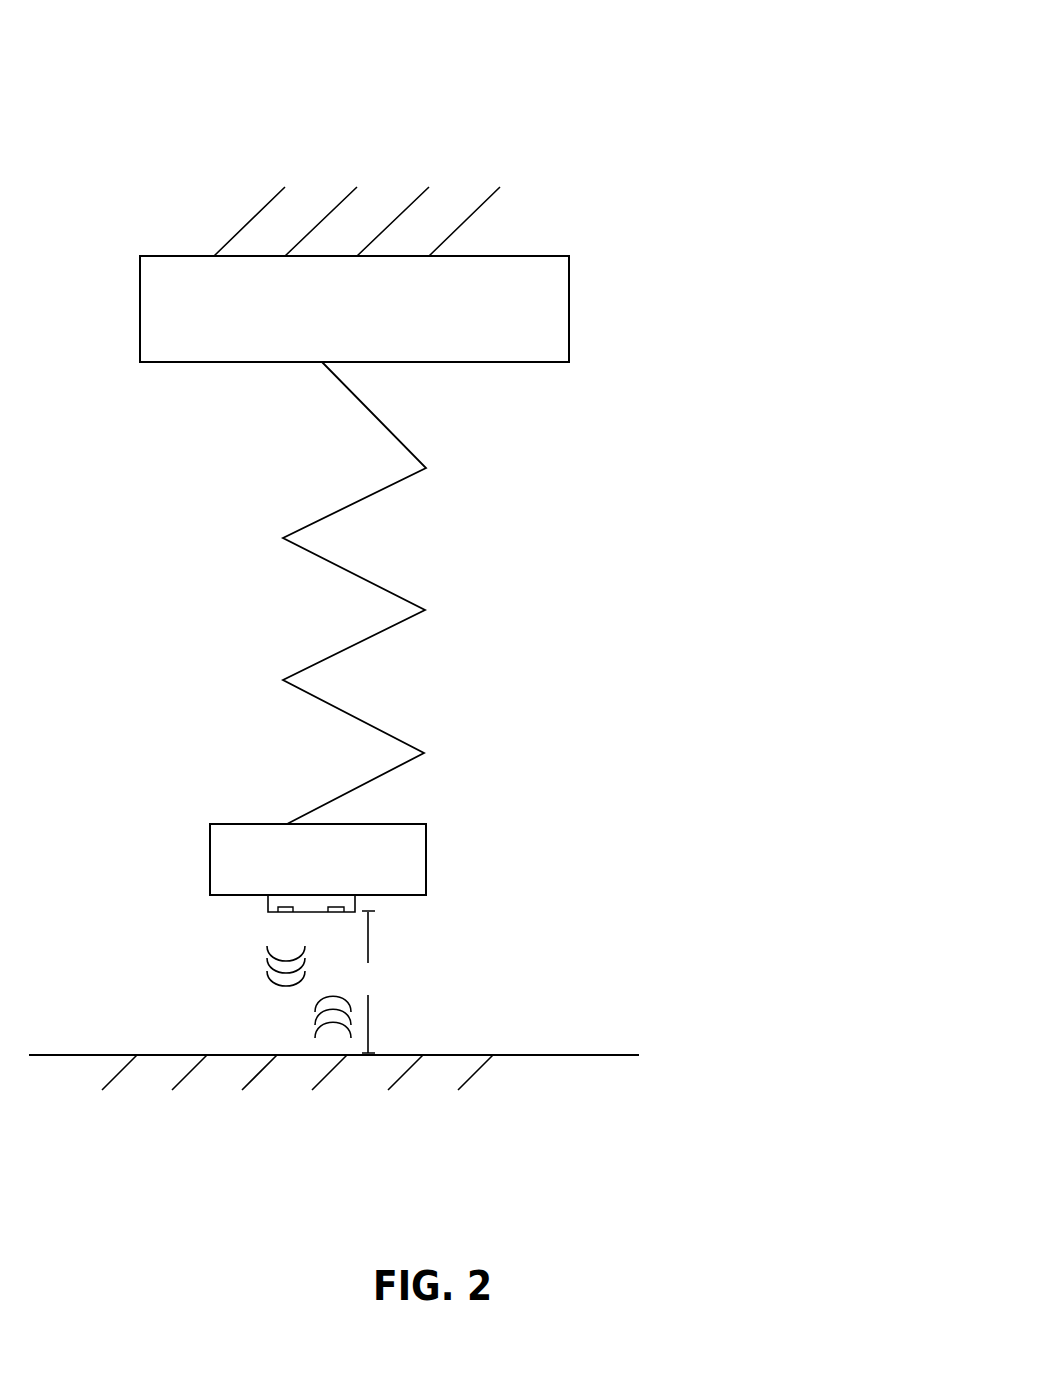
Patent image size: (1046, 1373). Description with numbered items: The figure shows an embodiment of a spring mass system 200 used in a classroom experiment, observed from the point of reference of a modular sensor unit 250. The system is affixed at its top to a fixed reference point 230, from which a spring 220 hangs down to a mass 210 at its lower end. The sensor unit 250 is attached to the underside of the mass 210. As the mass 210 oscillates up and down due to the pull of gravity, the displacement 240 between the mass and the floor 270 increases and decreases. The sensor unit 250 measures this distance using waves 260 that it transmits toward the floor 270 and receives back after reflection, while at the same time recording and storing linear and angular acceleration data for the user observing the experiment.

The spring mass system 200 is at (383, 123).
The mass 210 is at (400, 858).
The spring 220 is at (380, 585).
The reference point 230 is at (569, 310).
The displacement 240 is at (404, 979).
The modular sensor unit 250 is at (305, 902).
The waves 260 is at (315, 1028).
The floor 270 is at (590, 1055).